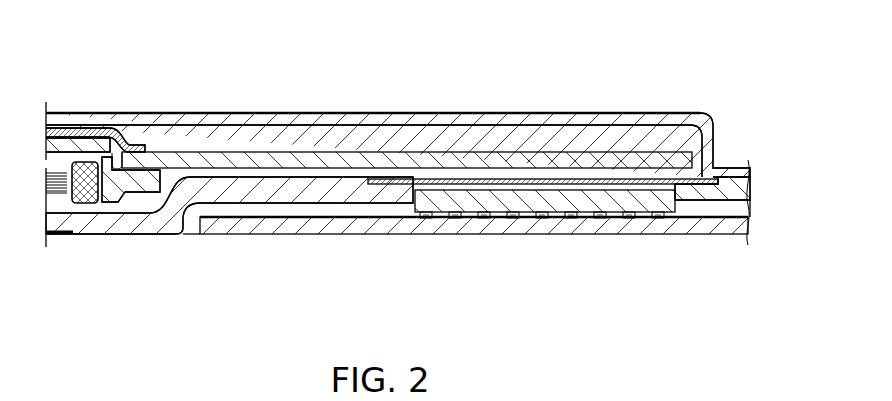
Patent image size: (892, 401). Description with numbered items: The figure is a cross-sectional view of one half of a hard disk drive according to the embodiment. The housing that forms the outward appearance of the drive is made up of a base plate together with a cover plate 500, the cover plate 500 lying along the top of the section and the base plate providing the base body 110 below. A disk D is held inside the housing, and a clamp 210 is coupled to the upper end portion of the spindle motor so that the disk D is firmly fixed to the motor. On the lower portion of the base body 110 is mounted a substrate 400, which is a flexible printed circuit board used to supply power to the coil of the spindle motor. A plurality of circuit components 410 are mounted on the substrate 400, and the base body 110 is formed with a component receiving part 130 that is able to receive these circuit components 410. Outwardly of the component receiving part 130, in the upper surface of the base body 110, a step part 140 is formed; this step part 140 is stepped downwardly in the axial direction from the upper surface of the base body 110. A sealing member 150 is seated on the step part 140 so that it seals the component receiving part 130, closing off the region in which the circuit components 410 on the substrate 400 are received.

The base body 110 is at (252, 185).
The component receiving part 130 is at (673, 193).
The step part 140 is at (372, 179).
The sealing member 150 is at (704, 175).
The clamp 210 is at (77, 113).
The substrate 400 is at (373, 231).
The circuit components 410 is at (547, 218).
The cover plate 500 is at (210, 113).
The disk D is at (495, 166).